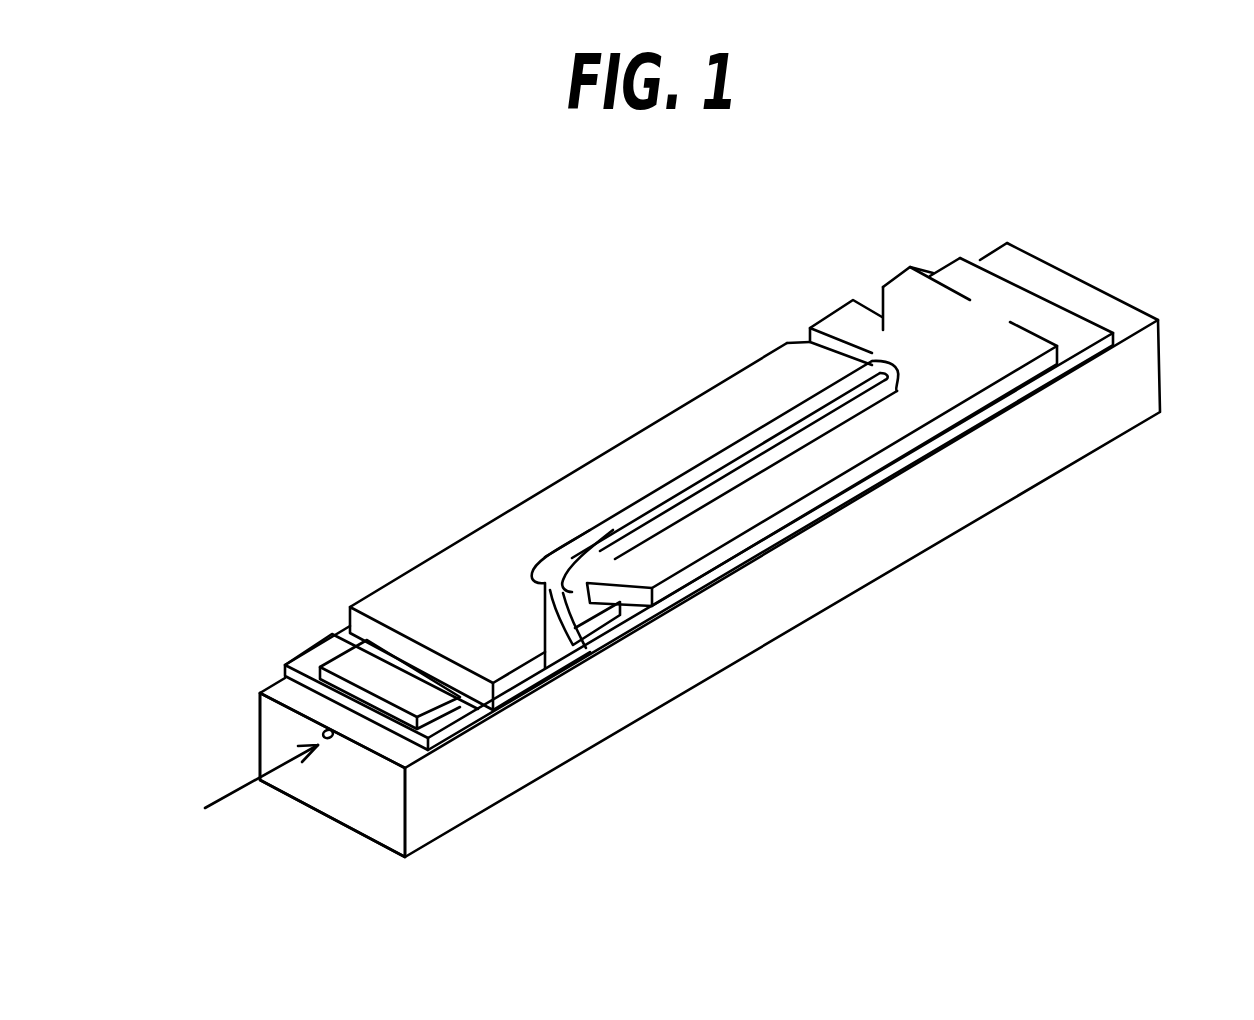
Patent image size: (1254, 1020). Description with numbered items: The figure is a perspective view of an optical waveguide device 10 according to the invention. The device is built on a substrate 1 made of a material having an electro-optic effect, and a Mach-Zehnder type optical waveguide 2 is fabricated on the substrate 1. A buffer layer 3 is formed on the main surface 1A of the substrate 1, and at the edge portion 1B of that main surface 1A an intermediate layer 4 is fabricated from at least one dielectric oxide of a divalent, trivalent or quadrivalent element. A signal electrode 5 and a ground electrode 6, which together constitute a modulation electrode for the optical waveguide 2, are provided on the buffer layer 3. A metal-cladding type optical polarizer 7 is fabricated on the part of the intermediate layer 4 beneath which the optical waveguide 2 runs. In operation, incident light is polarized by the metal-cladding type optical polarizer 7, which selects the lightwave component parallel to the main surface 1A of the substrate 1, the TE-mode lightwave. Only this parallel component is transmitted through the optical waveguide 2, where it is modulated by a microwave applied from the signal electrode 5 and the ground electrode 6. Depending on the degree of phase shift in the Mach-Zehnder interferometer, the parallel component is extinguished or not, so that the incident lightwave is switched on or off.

The substrate 1 is at (1050, 438).
The main surface 1A is at (1000, 262).
The edge portion 1B is at (282, 688).
The optical waveguide 2 is at (320, 731).
The buffer layer 3 is at (515, 698).
The intermediate layer 4 is at (332, 634).
The signal electrode 5 is at (840, 320).
The ground electrode 6 is at (660, 457).
The metal-cladding type optical polarizer 7 is at (380, 672).
The optical waveguide device 10 is at (1090, 236).